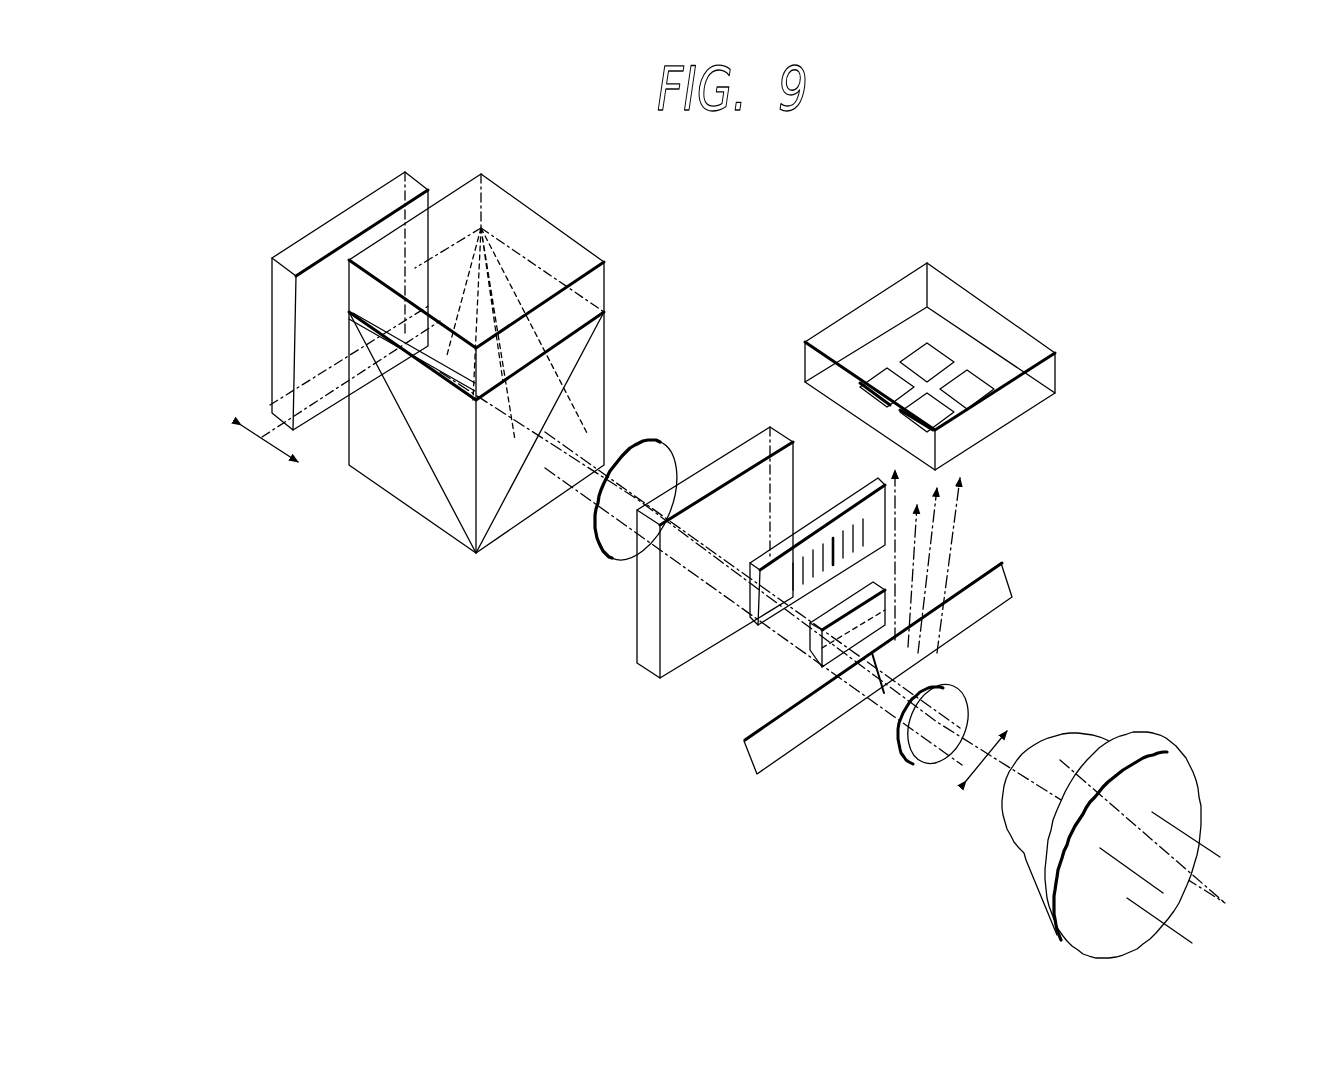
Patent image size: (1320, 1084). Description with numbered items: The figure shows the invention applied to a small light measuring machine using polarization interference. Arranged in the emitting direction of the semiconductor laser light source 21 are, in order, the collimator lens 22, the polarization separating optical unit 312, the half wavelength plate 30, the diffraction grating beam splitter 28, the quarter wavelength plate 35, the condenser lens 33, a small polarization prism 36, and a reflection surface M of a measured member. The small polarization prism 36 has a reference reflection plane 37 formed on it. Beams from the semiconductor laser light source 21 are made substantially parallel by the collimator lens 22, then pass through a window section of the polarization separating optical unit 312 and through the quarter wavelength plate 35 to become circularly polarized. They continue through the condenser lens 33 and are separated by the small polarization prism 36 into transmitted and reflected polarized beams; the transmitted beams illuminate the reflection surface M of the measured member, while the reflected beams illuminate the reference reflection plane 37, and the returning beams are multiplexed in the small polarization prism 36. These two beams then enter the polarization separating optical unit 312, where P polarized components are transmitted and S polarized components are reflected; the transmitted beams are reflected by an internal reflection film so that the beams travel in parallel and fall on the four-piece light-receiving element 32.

The reflection surface of a measured member M is at (372, 203).
The small polarization prism 36 is at (407, 482).
The reference reflection plane 37 is at (478, 227).
The condenser lens 33 is at (612, 547).
The quarter wavelength plate 35 is at (747, 450).
The diffraction grating beam splitter 28 is at (847, 510).
The half wavelength plate 30 is at (810, 650).
The polarization separating optical unit 312 is at (1000, 588).
The four-piece light-receiving element 32 is at (990, 305).
The collimator lens 22 is at (933, 765).
The semiconductor laser light source 21 is at (1167, 750).